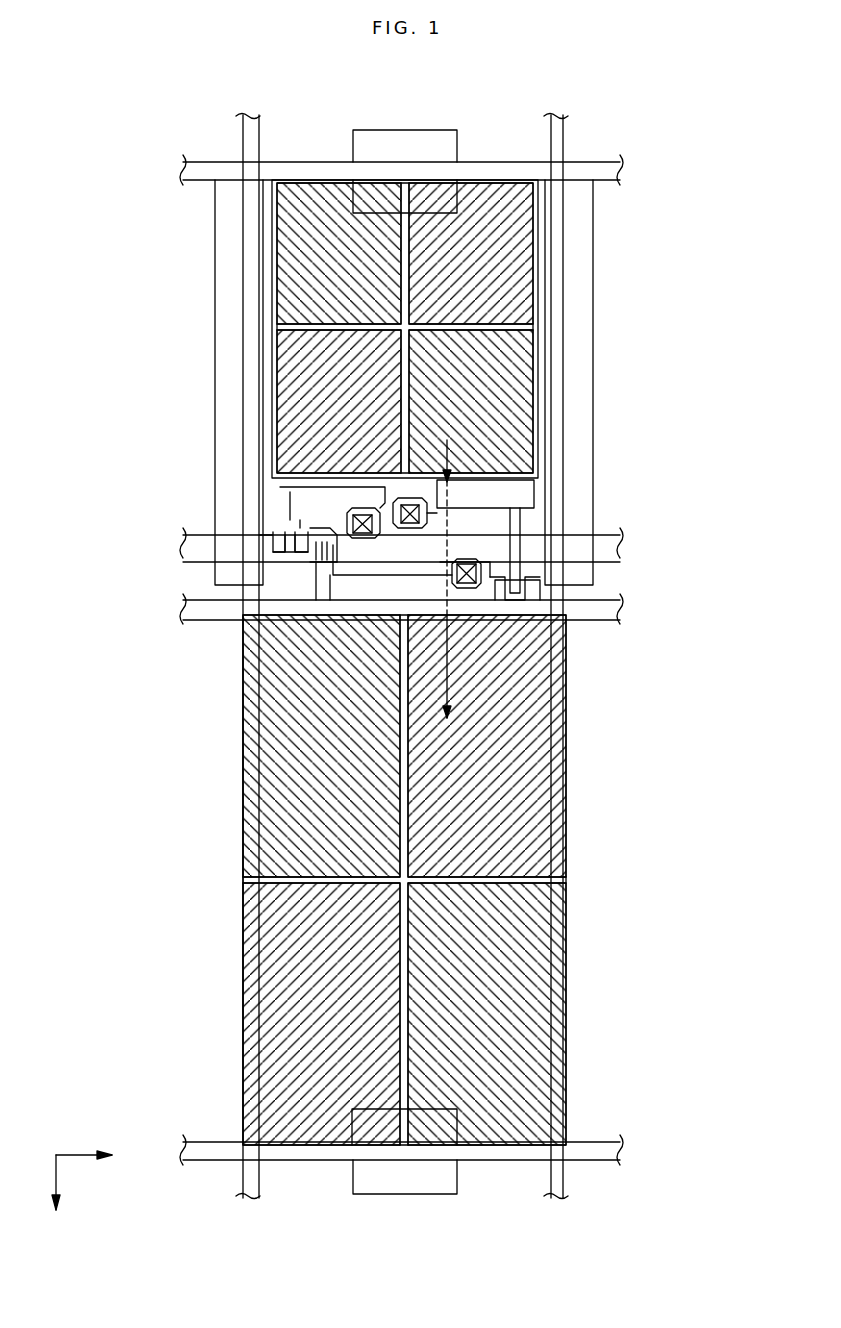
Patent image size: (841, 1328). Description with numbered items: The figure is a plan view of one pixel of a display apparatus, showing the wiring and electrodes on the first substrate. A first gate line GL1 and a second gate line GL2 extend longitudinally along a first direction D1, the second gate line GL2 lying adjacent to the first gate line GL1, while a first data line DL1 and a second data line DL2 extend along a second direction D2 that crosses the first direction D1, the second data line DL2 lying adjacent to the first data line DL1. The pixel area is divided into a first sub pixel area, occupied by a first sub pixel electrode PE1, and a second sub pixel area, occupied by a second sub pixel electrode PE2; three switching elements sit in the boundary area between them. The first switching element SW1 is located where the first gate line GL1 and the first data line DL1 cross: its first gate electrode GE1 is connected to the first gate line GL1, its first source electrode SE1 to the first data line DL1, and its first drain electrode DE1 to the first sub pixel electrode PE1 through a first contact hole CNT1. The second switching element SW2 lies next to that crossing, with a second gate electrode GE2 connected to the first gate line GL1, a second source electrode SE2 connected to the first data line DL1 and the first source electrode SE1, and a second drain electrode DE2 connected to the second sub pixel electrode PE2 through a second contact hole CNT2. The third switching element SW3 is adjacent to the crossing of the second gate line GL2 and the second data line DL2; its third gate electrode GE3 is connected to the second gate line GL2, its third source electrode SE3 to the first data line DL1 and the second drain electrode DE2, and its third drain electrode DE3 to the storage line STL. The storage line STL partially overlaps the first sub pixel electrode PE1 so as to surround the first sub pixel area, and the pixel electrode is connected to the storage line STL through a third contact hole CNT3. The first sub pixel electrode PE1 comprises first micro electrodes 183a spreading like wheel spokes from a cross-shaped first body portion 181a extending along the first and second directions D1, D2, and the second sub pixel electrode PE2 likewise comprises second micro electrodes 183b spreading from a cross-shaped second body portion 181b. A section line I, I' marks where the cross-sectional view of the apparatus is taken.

The first data line DL1 is at (250, 686).
The second data line DL2 is at (555, 686).
The first gate line GL1 is at (620, 548).
The second gate line GL2 is at (620, 612).
The first sub pixel electrode PE1 is at (495, 329).
The first micro electrode 183a is at (527, 215).
The first body portion 181a is at (407, 327).
The second sub pixel electrode PE2 is at (481, 880).
The second micro electrode 183b is at (528, 768).
The second body portion 181b is at (405, 882).
The first contact hole CNT1 is at (362, 512).
The second contact hole CNT2 is at (468, 566).
The third contact hole CNT3 is at (412, 504).
The storage line STL is at (542, 488).
The first switching element SW1 is at (199, 502).
The first drain electrode DE1 is at (292, 533).
The first gate electrode GE1 is at (276, 545).
The first source electrode SE1 is at (318, 538).
The second switching element SW2 is at (266, 571).
The second source electrode SE2 is at (320, 540).
The second gate electrode GE2 is at (330, 560).
The second drain electrode DE2 is at (335, 575).
The third switching element SW3 is at (578, 642).
The third drain electrode DE3 is at (528, 592).
The third gate electrode GE3 is at (520, 600).
The third source electrode SE3 is at (495, 602).
The section line I is at (447, 515).
The section line I' is at (446, 682).
The first direction D1 is at (101, 1155).
The second direction D2 is at (58, 1197).